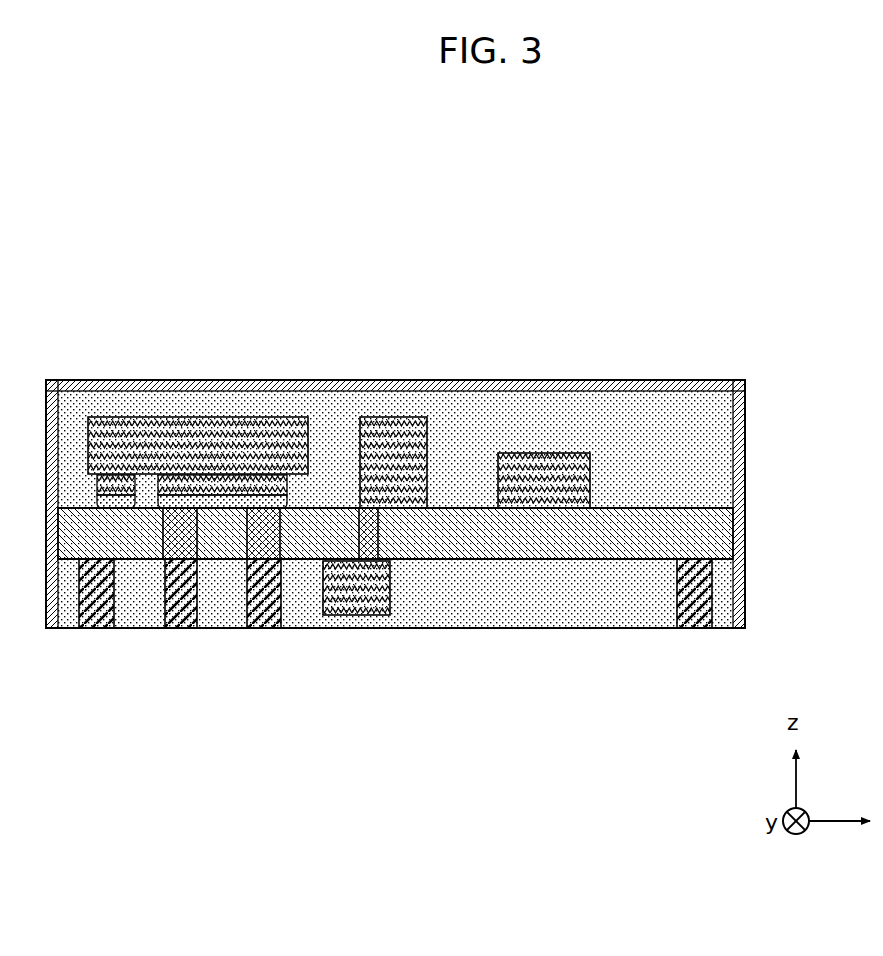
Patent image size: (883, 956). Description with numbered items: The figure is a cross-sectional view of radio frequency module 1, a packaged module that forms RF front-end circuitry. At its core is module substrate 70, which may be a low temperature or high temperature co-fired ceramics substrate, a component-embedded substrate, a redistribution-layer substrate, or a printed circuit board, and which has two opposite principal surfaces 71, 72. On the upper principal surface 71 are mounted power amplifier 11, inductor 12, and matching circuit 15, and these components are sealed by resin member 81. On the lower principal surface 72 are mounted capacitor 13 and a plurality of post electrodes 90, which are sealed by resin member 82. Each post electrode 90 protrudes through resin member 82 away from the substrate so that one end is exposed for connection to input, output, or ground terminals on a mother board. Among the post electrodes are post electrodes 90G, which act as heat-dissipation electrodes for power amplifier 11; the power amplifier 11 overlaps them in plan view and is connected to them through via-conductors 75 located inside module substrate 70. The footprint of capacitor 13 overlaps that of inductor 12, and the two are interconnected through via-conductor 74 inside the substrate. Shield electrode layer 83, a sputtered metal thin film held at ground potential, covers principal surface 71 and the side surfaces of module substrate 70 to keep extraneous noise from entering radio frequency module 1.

The radio frequency module 1 is at (641, 271).
The power amplifier 11 is at (200, 417).
The inductor 12 is at (390, 417).
The capacitor 13 is at (355, 615).
The matching circuit 15 is at (550, 453).
The module substrate 70 is at (717, 532).
The principal surface 71 is at (715, 508).
The principal surface 72 is at (722, 560).
The via-conductor 74 is at (378, 532).
The via-conductors 75 is at (163, 533).
The resin member 81 is at (710, 420).
The resin member 82 is at (540, 617).
The shield electrode layer 83 is at (680, 380).
The post electrodes 90 is at (95, 628).
The post electrodes 90G is at (265, 628).